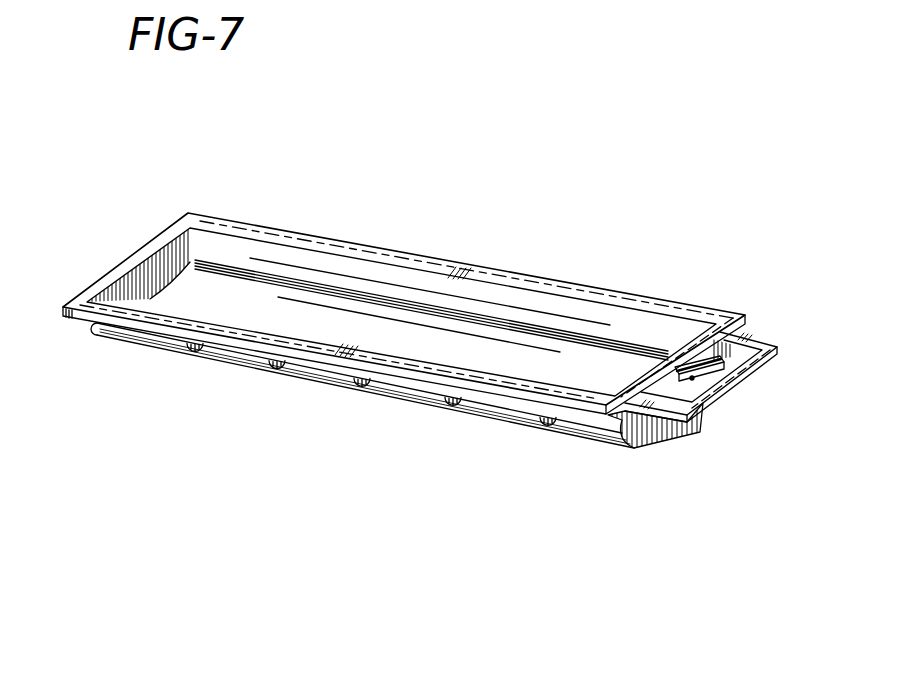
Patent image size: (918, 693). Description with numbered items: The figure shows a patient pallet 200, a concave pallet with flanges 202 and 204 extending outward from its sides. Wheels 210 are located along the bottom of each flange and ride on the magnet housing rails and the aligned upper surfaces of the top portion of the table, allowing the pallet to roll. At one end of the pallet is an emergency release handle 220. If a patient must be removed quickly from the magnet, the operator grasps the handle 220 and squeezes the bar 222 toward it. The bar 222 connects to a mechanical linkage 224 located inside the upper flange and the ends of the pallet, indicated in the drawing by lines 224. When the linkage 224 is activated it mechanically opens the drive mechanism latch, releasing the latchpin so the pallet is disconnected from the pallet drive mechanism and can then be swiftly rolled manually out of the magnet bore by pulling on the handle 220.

The pallet 200 is at (542, 455).
The flange 202 is at (136, 326).
The flange 204 is at (563, 277).
The wheels 210 is at (278, 364).
The emergency release handle 220 is at (740, 378).
The bar 222 is at (693, 379).
The mechanical linkage 224 is at (360, 252).